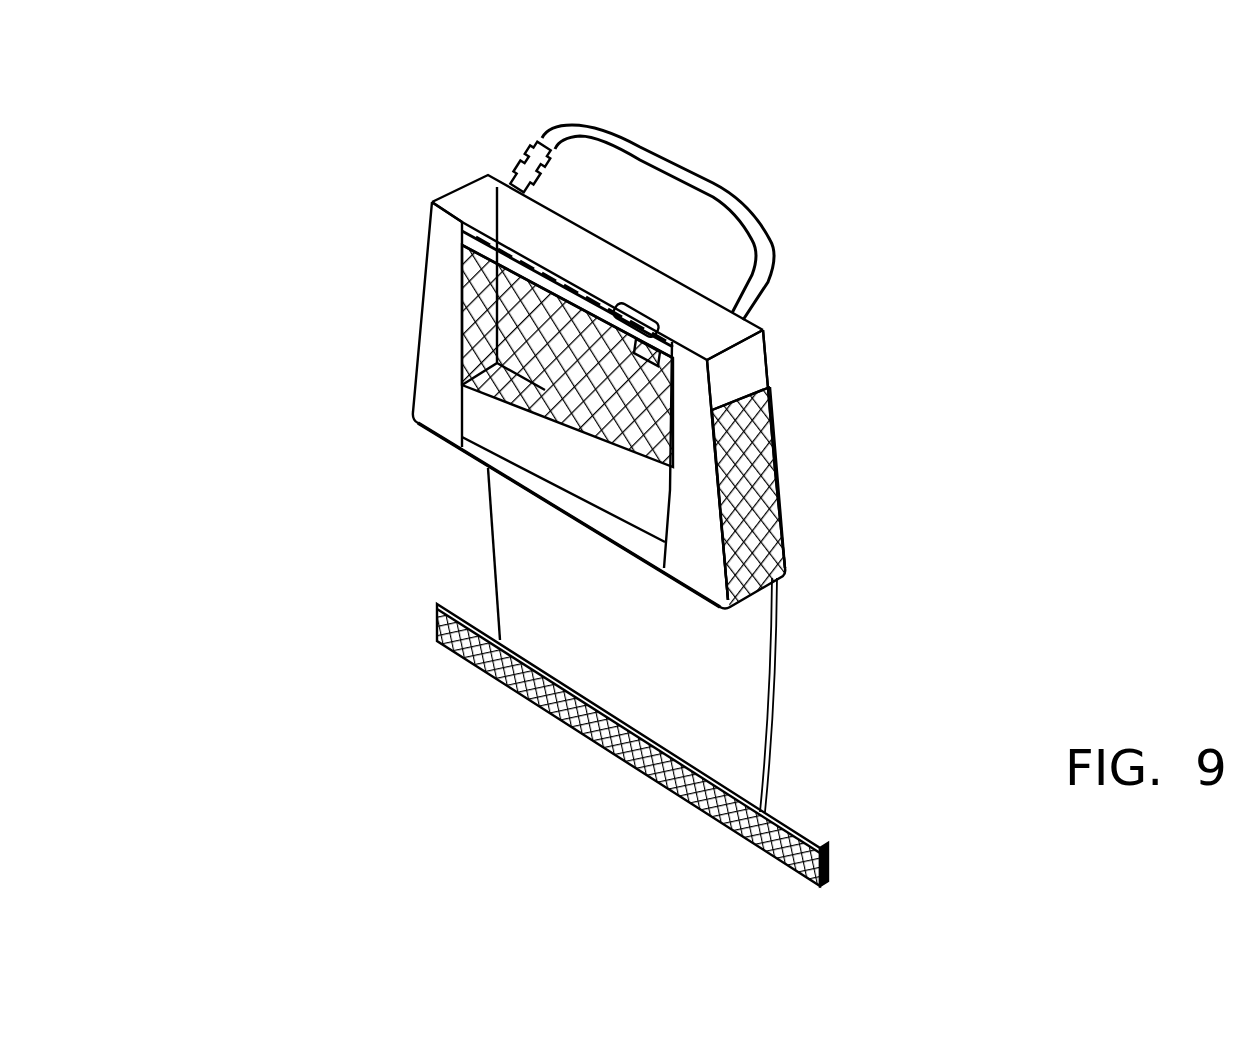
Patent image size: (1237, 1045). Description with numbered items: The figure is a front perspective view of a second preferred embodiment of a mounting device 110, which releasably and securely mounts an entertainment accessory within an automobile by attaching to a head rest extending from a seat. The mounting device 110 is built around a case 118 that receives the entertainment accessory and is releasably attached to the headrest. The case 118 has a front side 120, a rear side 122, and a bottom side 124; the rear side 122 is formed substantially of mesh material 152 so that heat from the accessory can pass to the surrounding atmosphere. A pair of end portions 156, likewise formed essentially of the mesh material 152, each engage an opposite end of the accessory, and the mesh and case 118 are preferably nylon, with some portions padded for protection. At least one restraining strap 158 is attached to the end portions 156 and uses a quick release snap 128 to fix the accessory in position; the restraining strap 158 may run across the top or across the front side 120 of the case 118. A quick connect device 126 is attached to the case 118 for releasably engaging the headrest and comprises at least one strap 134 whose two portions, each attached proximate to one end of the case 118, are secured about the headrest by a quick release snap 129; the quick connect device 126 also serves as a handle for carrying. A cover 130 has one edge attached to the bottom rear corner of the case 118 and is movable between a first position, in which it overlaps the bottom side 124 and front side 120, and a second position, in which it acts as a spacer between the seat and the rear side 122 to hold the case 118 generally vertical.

The mounting device 110 is at (990, 138).
The case 118 is at (437, 250).
The front side 120 is at (430, 348).
The rear side 122 is at (770, 373).
The bottom side 124 is at (573, 465).
The quick connect device 126 is at (683, 163).
The quick release snap 128 is at (645, 327).
The quick release snap 129 is at (538, 142).
The cover 130 is at (717, 682).
The strap 134 is at (740, 203).
The mesh material 152 is at (768, 487).
The end portions 156 is at (470, 197).
The restraining strap 158 is at (553, 270).